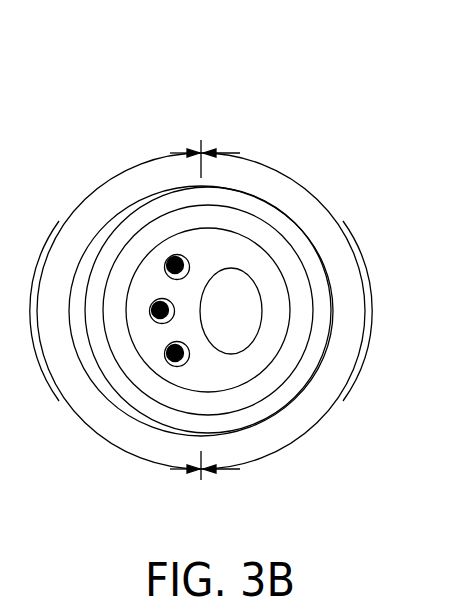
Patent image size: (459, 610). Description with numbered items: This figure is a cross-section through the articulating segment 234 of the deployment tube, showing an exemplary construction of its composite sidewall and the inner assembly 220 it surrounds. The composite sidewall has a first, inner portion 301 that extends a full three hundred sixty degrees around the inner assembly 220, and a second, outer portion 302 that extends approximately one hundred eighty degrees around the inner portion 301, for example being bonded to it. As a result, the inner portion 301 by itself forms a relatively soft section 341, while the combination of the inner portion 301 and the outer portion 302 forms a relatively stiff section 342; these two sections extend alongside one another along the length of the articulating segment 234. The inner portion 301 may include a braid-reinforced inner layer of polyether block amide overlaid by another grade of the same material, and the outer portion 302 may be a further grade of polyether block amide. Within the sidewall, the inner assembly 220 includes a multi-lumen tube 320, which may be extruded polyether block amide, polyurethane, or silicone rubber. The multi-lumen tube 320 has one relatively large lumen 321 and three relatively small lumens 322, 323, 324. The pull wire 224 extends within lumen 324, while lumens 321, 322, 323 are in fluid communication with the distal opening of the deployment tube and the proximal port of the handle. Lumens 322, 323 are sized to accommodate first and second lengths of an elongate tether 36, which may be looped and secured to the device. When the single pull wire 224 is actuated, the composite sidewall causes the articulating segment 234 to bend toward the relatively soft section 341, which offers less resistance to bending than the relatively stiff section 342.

The articulating segment 234 is at (124, 62).
The elongate tether 36 is at (161, 300).
The second, outer portion 302 is at (70, 296).
The first, inner portion 301 is at (320, 327).
The multi-lumen tube 320 is at (257, 263).
The relatively large lumen 321 is at (252, 327).
The relatively small lumen 322 is at (166, 360).
The relatively small lumen 323 is at (203, 254).
The relatively small lumen 324 is at (168, 258).
The inner assembly 220 is at (298, 303).
The pull wire 224 is at (149, 311).
The relatively soft section 341 is at (363, 311).
The relatively stiff section 342 is at (38, 311).